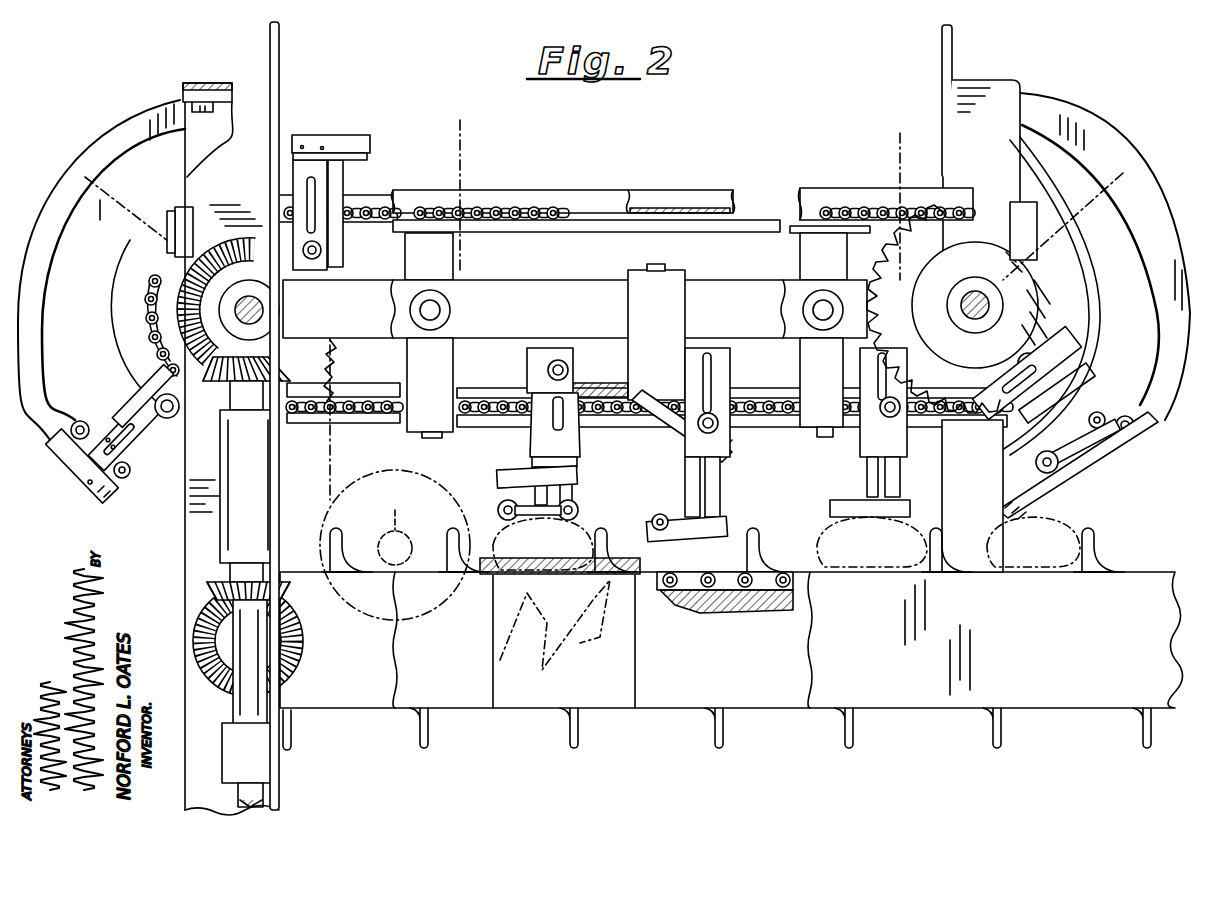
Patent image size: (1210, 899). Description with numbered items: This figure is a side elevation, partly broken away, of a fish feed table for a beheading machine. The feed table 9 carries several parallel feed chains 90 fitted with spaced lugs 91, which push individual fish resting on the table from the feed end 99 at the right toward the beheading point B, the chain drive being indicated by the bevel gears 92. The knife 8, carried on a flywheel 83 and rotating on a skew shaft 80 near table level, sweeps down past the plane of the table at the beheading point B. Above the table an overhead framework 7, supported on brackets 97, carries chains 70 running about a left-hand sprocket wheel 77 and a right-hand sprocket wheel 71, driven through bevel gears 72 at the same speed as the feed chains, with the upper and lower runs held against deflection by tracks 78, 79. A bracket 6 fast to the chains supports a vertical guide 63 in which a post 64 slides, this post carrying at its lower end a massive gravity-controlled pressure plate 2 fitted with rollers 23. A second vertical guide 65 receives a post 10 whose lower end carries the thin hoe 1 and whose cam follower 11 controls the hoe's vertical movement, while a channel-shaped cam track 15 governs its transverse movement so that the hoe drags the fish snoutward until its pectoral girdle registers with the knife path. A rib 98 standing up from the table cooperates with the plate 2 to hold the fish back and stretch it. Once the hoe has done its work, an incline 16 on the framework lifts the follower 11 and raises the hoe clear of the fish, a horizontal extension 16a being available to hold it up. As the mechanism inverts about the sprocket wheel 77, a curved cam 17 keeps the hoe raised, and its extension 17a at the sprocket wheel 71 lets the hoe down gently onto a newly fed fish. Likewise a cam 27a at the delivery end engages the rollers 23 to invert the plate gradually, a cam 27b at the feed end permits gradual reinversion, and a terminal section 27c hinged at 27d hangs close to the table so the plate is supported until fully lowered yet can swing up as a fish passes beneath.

The hoe 1 is at (355, 140).
The pressure plate 2 is at (372, 157).
The bracket 6 is at (292, 187).
The overhead framework 7 is at (513, 287).
The knife 8 is at (572, 622).
The feed table 9 is at (731, 640).
The post 10 is at (150, 446).
The cam follower 11 is at (322, 258).
The cam track 15 is at (608, 192).
The incline 16 is at (713, 458).
The horizontal extension of the incline 16a is at (586, 391).
The curved cam 17 is at (134, 268).
The extension of the cam 17a is at (1063, 254).
The rollers 23 is at (82, 421).
The cam 27a is at (38, 328).
The cam 27b is at (1135, 172).
The terminal section 27c is at (1043, 498).
The hinge 27d is at (1128, 433).
The vertical guide 63 is at (335, 243).
The post 64 is at (113, 388).
The vertical guide 65 is at (318, 173).
The chains 70 is at (488, 207).
The sprocket wheel 71 is at (958, 309).
The bevel gears 72 is at (215, 378).
The sprocket wheel 77 is at (336, 352).
The track 78 is at (716, 229).
The track 79 is at (777, 418).
The shaft 80 is at (395, 545).
The flywheel 83 is at (330, 497).
The feed chains 90 is at (690, 575).
The lugs 91 is at (752, 548).
The bevel gears 92 is at (208, 583).
The brackets 97 is at (253, 110).
The rib 98 is at (810, 540).
The feed end 99 is at (1153, 567).
The beheading point B is at (543, 544).